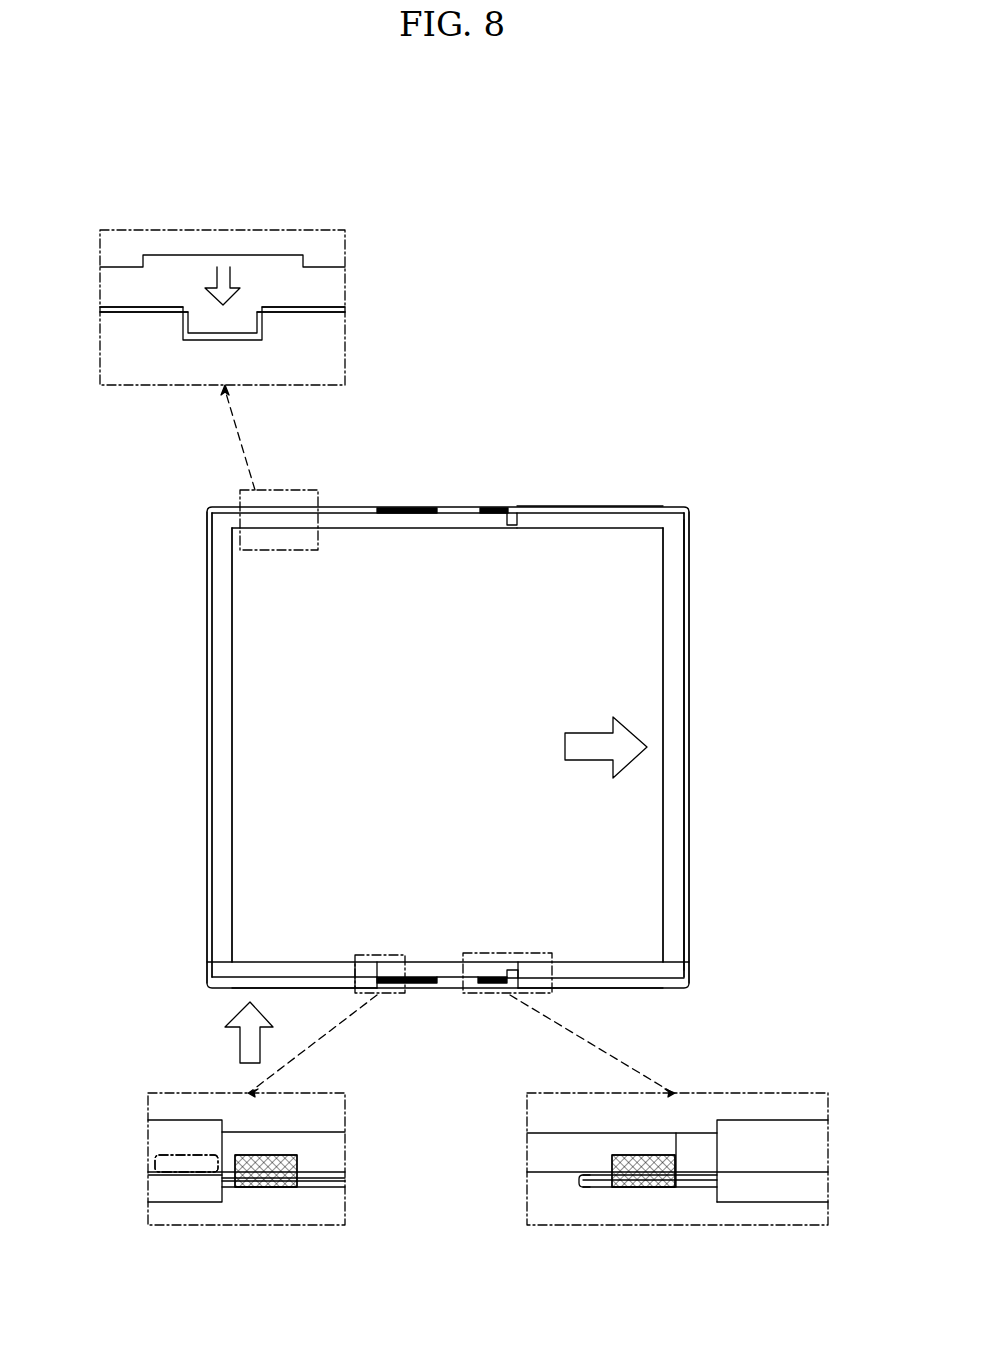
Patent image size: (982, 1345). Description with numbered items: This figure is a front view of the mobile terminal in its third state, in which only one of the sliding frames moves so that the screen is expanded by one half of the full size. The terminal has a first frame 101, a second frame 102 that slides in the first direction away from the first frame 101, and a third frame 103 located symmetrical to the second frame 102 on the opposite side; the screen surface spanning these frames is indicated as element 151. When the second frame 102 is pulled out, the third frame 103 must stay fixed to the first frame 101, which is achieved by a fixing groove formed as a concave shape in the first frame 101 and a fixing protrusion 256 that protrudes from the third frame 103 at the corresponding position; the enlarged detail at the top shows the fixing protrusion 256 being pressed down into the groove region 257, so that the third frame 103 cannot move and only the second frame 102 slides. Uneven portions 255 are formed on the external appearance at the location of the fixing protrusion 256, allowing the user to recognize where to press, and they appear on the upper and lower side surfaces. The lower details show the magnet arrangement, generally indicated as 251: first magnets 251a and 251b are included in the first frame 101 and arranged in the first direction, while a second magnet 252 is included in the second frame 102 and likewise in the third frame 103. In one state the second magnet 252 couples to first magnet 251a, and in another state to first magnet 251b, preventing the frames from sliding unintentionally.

The first frame 101 is at (459, 516).
The second frame 102 is at (680, 518).
The third frame 103 is at (220, 518).
The display unit 151 is at (669, 623).
The uneven portions 255 is at (271, 255).
The fixing protrusion 256 is at (243, 325).
The second magnet 257 is at (183, 322).
The hinge shaft 251 is at (290, 1170).
The first magnet 251a is at (206, 1165).
The first magnet 251b is at (665, 1175).
The second magnet 252 is at (258, 1187).